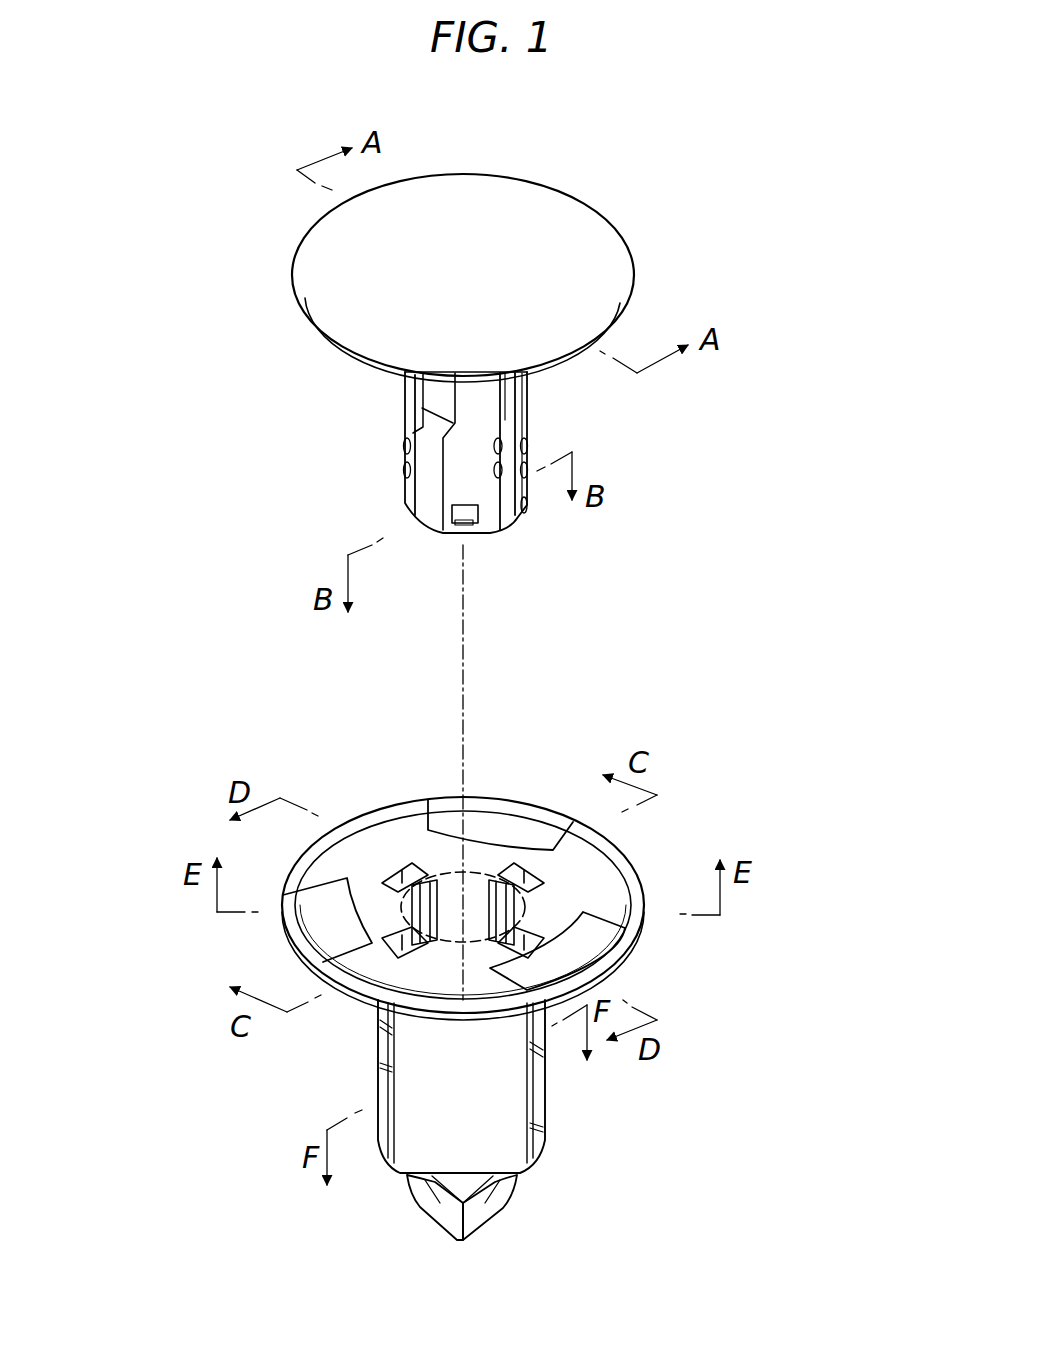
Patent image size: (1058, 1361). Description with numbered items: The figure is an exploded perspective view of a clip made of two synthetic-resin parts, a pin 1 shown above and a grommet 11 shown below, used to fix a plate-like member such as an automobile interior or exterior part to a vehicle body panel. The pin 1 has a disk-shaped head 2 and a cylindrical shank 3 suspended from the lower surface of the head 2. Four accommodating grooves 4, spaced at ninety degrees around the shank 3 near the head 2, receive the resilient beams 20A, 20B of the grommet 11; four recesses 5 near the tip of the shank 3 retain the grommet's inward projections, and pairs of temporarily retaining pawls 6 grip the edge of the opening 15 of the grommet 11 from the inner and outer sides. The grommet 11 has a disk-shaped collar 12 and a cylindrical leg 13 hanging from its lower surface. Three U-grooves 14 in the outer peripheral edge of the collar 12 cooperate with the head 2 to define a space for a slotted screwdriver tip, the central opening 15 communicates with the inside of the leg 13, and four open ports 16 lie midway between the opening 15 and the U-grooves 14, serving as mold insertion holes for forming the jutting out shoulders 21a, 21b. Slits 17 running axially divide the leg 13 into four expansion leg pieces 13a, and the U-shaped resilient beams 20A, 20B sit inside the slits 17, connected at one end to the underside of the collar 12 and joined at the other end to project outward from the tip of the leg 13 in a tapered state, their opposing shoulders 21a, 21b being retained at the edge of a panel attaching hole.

The pin 1 is at (497, 360).
The head 2 is at (493, 186).
The shank 3 is at (400, 382).
The accommodating groove 4 is at (433, 393).
The recess 5 is at (402, 483).
The temporarily retaining pawl 6 is at (405, 465).
The grommet 11 is at (485, 1023).
The collar 12 is at (381, 815).
The leg 13 is at (353, 1098).
The expansion leg piece 13a is at (542, 1107).
The U-groove 14 is at (508, 815).
The opening 15 is at (463, 930).
The open port 16 is at (548, 866).
The slit 17 is at (387, 1067).
The resilient beam 20A is at (432, 1207).
The resilient beam 20B is at (492, 1217).
The jutting out shoulder 21a is at (382, 1024).
The jutting out shoulder 21b is at (533, 1048).